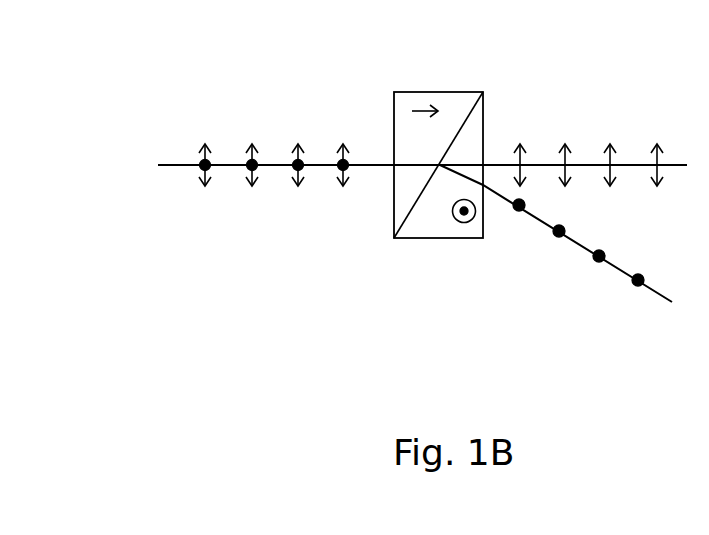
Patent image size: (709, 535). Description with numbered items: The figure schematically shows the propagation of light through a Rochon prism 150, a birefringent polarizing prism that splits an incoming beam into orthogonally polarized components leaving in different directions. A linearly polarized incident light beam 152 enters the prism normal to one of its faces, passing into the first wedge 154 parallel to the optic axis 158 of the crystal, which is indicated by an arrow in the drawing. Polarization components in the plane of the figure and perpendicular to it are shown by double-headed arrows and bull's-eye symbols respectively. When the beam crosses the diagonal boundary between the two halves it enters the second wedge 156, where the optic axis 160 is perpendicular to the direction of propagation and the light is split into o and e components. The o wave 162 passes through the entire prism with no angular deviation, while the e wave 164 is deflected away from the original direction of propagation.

The Rochon prism 150 is at (270, 93).
The incident light beam 152 is at (178, 178).
The first wedge 154 is at (405, 203).
The second wedge 156 is at (418, 228).
The optic axis 158 is at (415, 102).
The optic axis 160 is at (460, 230).
The o wave 162 is at (632, 153).
The e wave 164 is at (615, 272).